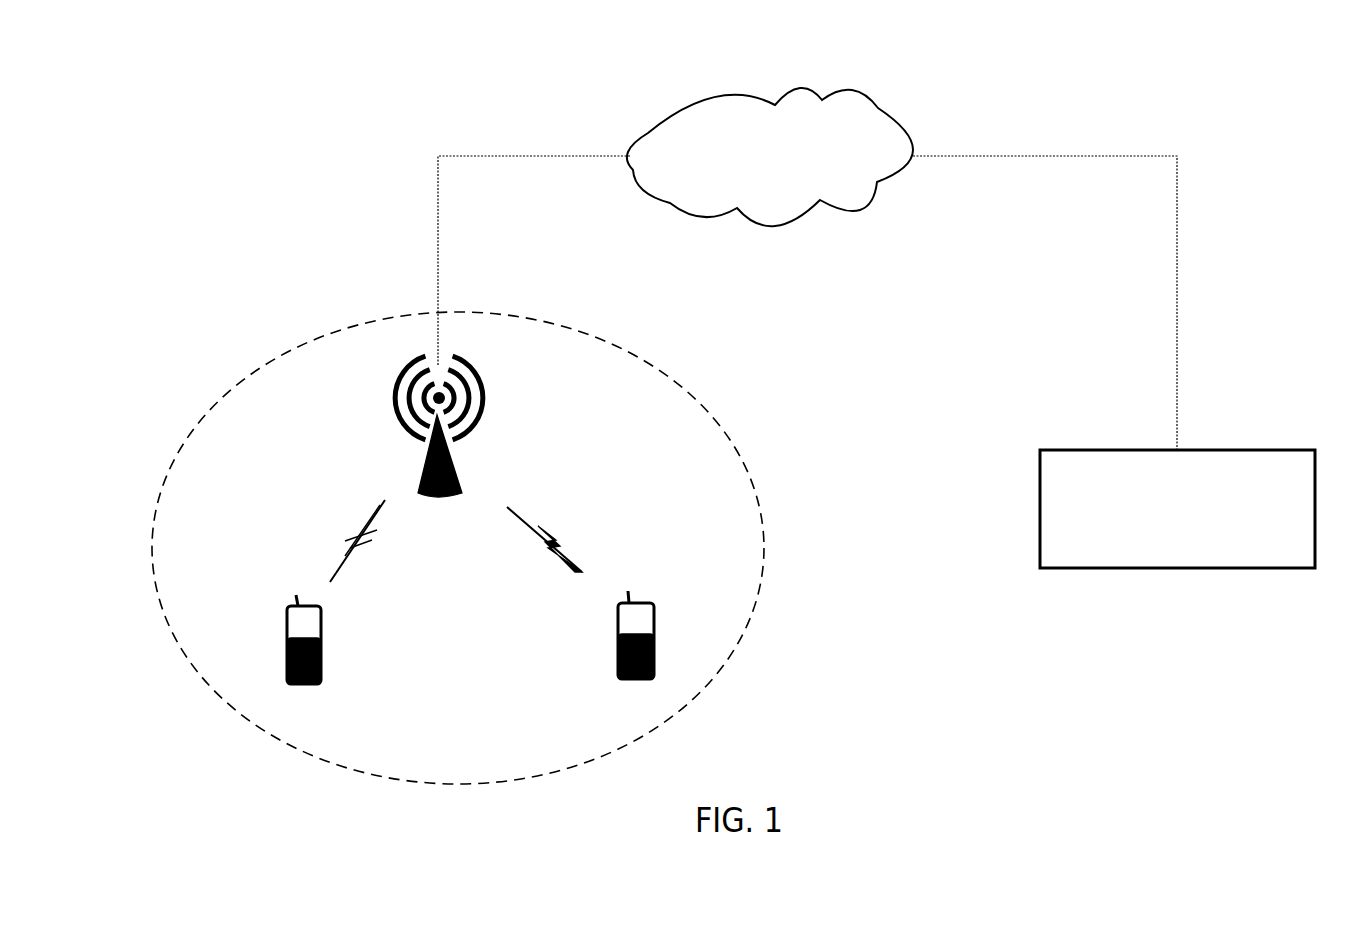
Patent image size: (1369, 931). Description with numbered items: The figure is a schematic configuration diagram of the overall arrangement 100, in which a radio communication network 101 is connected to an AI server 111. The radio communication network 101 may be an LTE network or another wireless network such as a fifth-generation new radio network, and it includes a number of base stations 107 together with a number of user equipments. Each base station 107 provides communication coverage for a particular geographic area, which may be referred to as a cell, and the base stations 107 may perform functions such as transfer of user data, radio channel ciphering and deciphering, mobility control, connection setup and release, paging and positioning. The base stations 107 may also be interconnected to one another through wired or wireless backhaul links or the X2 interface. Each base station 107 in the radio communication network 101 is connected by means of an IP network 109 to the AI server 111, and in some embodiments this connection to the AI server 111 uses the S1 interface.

The communication system 100 is at (237, 72).
The radio communication network 101 is at (302, 344).
The BS 107 is at (410, 458).
The IP network 109 is at (753, 113).
The AI server 111 is at (1055, 467).